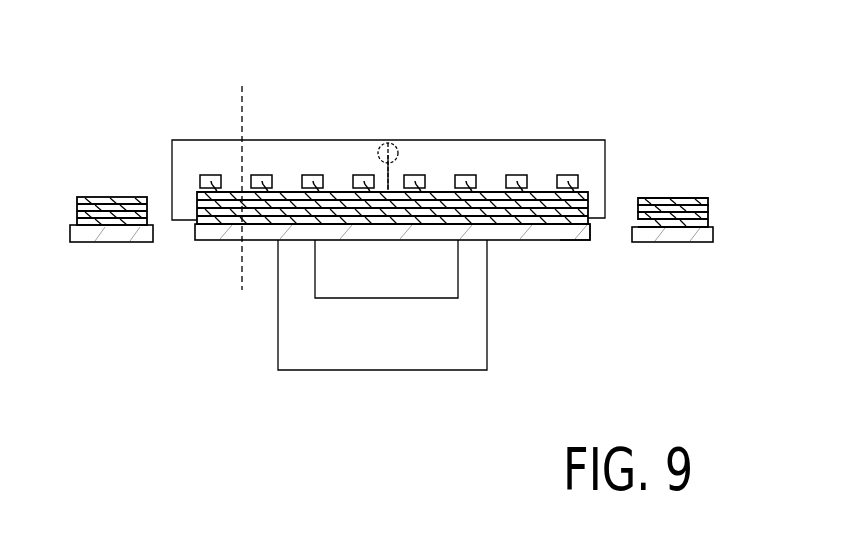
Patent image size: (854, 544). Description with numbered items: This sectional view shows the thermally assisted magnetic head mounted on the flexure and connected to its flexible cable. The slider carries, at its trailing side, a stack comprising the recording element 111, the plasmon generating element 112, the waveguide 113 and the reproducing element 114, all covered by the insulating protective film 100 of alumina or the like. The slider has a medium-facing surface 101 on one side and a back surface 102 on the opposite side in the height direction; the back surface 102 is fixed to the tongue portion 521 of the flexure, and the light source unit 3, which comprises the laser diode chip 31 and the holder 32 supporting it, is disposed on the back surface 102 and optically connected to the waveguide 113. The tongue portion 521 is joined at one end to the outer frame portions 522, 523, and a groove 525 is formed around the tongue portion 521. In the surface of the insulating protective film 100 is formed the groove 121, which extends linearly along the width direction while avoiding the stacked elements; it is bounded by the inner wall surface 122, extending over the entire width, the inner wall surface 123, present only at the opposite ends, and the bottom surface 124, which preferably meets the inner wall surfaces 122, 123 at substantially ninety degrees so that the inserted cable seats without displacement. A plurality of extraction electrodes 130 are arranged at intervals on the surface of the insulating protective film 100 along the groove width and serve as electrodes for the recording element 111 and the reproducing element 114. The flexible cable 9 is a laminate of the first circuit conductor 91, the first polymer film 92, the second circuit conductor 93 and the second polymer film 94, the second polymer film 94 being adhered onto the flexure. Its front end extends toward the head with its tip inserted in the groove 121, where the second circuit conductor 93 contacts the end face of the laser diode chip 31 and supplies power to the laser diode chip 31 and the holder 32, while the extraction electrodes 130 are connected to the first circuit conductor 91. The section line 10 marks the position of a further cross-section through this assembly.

The flexible cable 9 is at (688, 198).
The first circuit conductor 91 is at (700, 198).
The first polymer film 92 is at (703, 206).
The second circuit conductor 93 is at (705, 214).
The second polymer film 94 is at (705, 232).
The section line 10 is at (242, 70).
The insulating protective film 100 is at (381, 182).
The medium-facing surface 101 is at (545, 140).
The back surface 102 is at (191, 242).
The recording element 111 is at (333, 138).
The plasmon generating element 112 is at (333, 138).
The reproducing element 114 is at (382, 152).
The waveguide 113 is at (395, 172).
The extraction electrodes 130 is at (516, 175).
The groove 121 is at (384, 209).
The inner wall surface 122 is at (196, 186).
The inner wall surface 123 is at (600, 195).
The bottom surface 124 is at (190, 216).
The light source unit 3 is at (377, 305).
The laser diode chip 31 is at (447, 275).
The holder 32 is at (465, 330).
The tongue portion 521 is at (575, 240).
The outer frame portion 522 is at (167, 238).
The outer frame portion 523 is at (684, 243).
The groove 525 is at (119, 254).